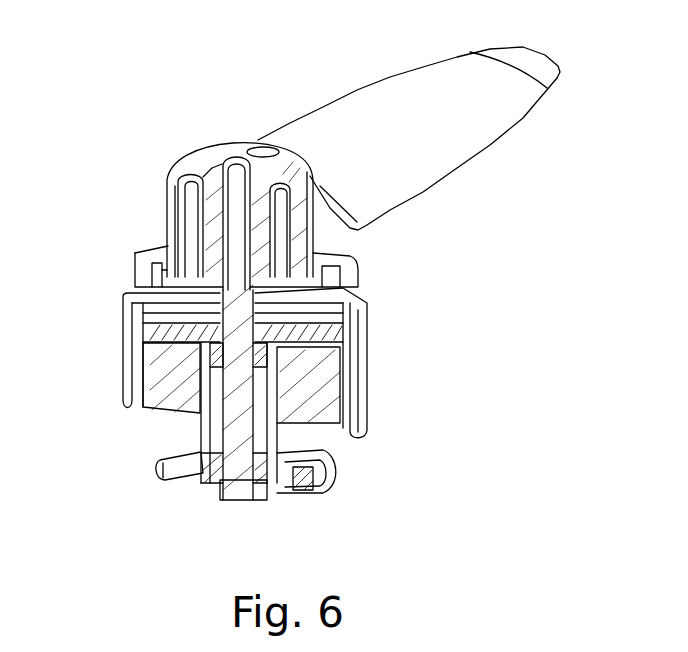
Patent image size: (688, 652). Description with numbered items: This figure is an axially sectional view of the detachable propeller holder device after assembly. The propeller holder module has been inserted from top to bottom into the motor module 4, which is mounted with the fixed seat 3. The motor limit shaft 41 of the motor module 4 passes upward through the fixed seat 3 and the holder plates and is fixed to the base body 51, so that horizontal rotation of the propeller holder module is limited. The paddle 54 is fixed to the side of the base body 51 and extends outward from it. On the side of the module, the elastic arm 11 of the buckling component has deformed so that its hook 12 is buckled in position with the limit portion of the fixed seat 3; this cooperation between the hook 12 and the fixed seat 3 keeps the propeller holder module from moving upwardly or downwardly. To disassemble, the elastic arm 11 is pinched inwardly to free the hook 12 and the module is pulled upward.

The paddle 54 is at (443, 147).
The base body 51 is at (202, 178).
The elastic arm 11 is at (167, 217).
The hook 12 is at (167, 268).
The fixed seat 3 is at (360, 288).
The motor module 4 is at (367, 387).
The motor limit shaft 41 is at (207, 410).